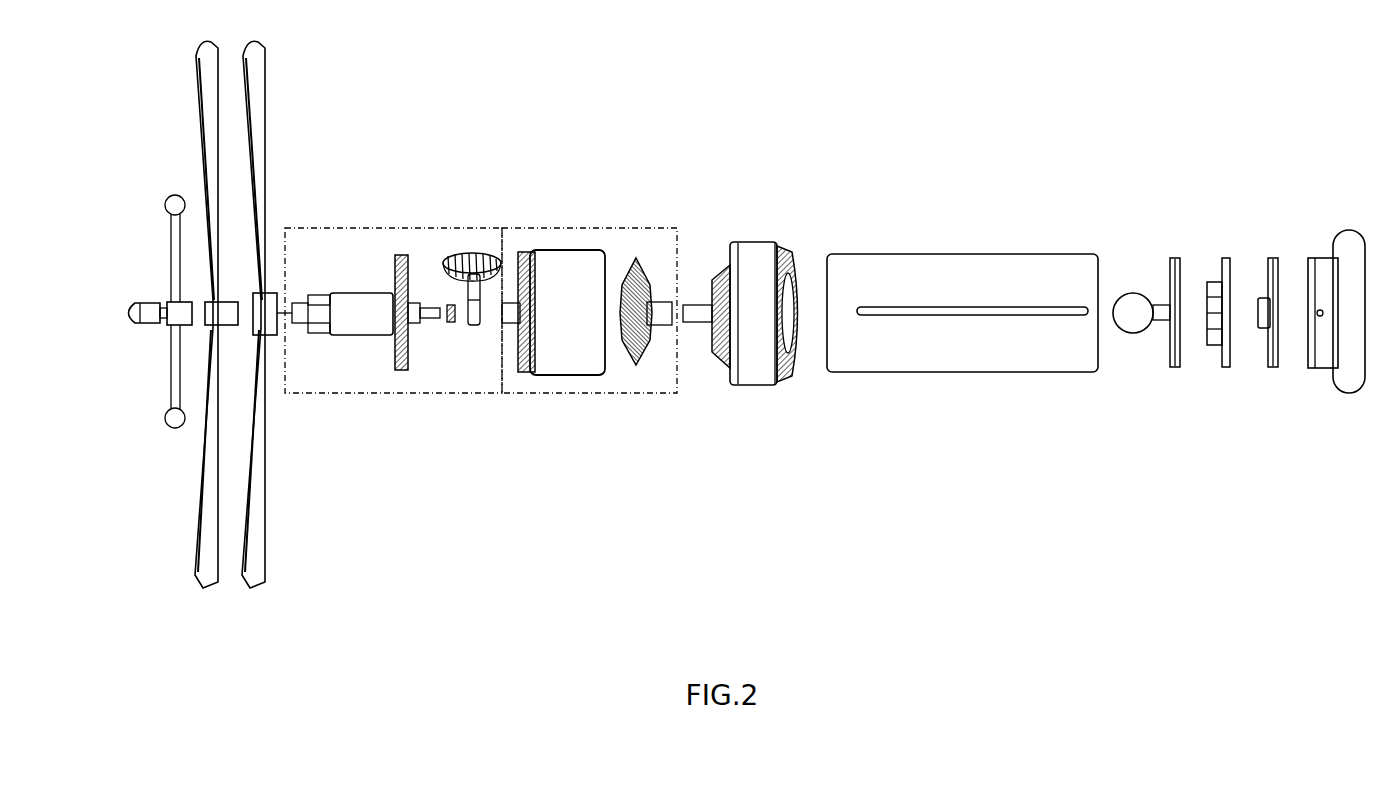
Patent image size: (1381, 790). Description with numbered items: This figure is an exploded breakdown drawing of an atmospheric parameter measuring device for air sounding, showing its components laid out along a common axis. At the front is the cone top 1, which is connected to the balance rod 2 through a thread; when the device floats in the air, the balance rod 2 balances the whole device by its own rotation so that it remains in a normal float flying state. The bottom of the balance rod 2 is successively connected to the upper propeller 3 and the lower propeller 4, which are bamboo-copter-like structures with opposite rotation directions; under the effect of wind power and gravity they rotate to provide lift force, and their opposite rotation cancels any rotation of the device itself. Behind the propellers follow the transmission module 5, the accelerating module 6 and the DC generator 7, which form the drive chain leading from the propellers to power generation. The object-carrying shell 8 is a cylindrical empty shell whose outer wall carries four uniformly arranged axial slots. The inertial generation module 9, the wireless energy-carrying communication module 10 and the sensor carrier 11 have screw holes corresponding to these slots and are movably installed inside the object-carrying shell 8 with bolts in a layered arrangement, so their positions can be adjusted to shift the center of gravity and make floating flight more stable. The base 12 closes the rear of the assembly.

The cone top 1 is at (161, 217).
The balance rod 2 is at (161, 343).
The upper propeller 3 is at (252, 314).
The lower propeller 4 is at (308, 314).
The transmission module 5 is at (399, 251).
The accelerating module 6 is at (603, 251).
The DC generator 7 is at (790, 247).
The object-carrying shell 8 is at (962, 373).
The inertial generation module 9 is at (1164, 238).
The wireless energy-carrying communication module 10 is at (1243, 375).
The sensor carrier 11 is at (1314, 238).
The base 12 is at (1340, 361).